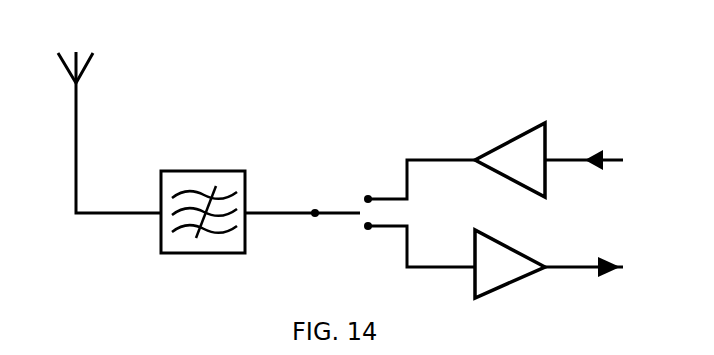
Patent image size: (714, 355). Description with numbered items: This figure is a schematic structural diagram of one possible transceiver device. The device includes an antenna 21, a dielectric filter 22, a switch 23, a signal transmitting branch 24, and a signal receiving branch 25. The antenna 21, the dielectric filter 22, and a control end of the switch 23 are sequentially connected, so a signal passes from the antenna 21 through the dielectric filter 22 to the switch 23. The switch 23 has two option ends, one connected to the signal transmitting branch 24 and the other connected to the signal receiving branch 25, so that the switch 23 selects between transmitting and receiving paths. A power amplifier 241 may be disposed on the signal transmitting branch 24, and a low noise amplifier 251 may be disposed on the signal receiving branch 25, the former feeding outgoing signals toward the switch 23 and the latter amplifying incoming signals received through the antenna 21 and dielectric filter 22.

The antenna 21 is at (88, 70).
The dielectric filter 22 is at (192, 167).
The switch 23 is at (327, 210).
The signal transmitting branch 24 is at (440, 158).
The power amplifier 241 is at (537, 138).
The signal receiving branch 25 is at (438, 265).
The low noise amplifier 251 is at (525, 248).